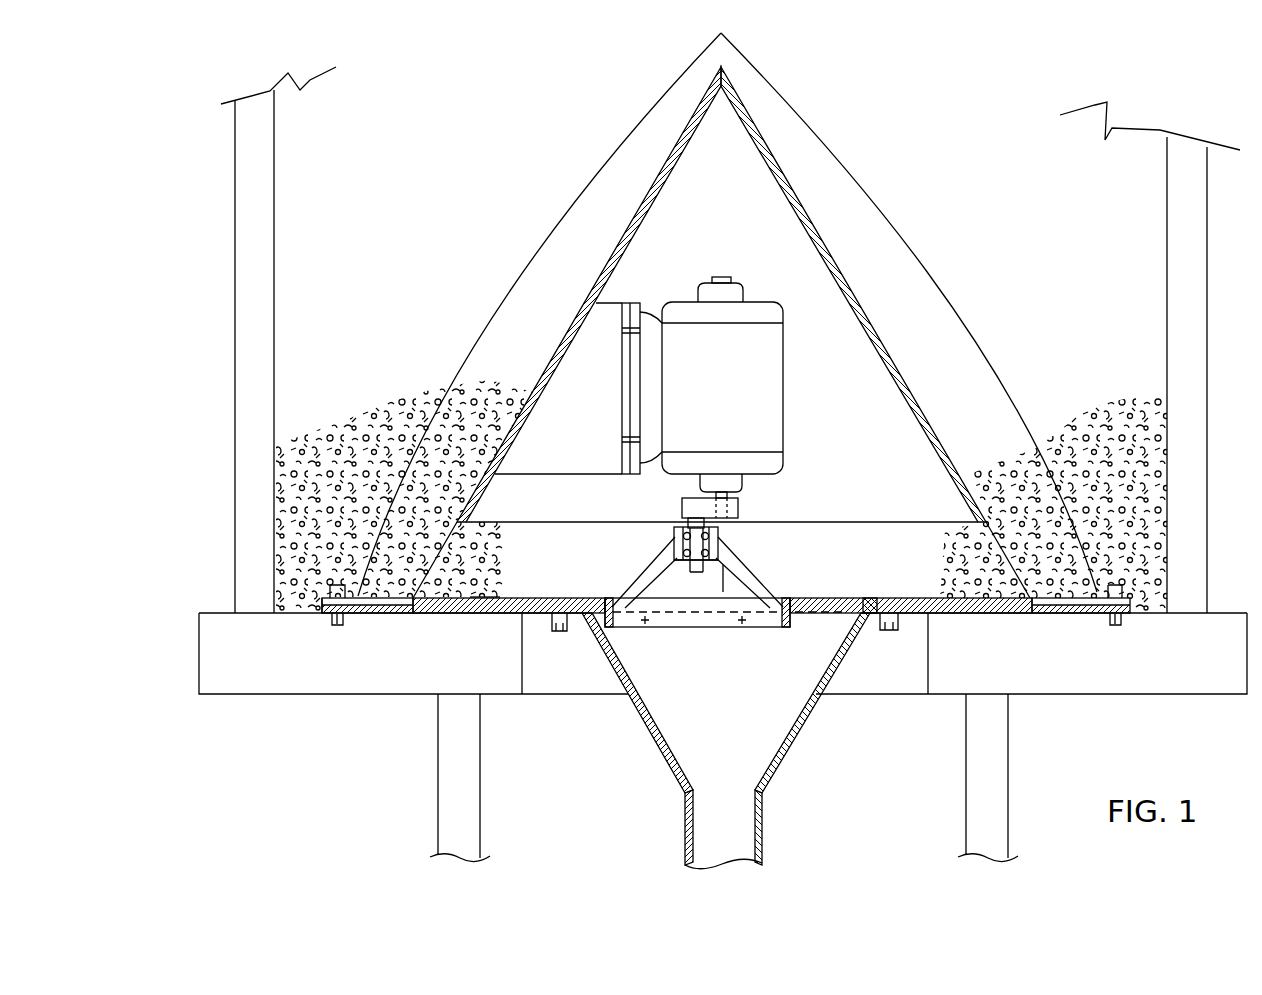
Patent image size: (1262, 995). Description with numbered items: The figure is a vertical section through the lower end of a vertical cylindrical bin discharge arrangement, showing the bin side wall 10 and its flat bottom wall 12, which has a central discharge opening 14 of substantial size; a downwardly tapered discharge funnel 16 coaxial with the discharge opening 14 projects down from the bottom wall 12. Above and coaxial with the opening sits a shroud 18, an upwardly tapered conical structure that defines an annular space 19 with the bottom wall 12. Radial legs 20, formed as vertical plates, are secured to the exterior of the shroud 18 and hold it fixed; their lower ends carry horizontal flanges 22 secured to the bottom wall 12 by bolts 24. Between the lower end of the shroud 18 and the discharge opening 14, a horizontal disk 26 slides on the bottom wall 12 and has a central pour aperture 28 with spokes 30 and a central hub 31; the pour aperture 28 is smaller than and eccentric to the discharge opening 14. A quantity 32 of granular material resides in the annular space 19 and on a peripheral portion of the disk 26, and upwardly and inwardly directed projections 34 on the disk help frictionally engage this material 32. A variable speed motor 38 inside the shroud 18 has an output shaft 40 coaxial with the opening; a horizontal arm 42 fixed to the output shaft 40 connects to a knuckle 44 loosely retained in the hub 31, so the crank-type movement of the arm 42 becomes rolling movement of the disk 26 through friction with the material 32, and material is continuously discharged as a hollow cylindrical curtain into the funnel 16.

The side wall 10 is at (232, 331).
The bottom wall 12 is at (437, 614).
The discharge opening 14 is at (838, 618).
The discharge funnel 16 is at (657, 761).
The shroud 18 is at (785, 165).
The annular space 19 is at (466, 552).
The radial legs 20 is at (852, 180).
The horizontal flanges 22 is at (320, 594).
The bolts 24 is at (322, 578).
The horizontal disk 26 is at (830, 589).
The pour aperture 28 is at (737, 586).
The spokes 30 is at (846, 592).
The central hub 31 is at (677, 576).
The quantity of granular material 32 is at (494, 592).
The projections 34 is at (503, 596).
The variable speed motor 38 is at (788, 392).
The output shaft 40 is at (724, 494).
The horizontal arm 42 is at (744, 512).
The knuckle 44 is at (712, 576).